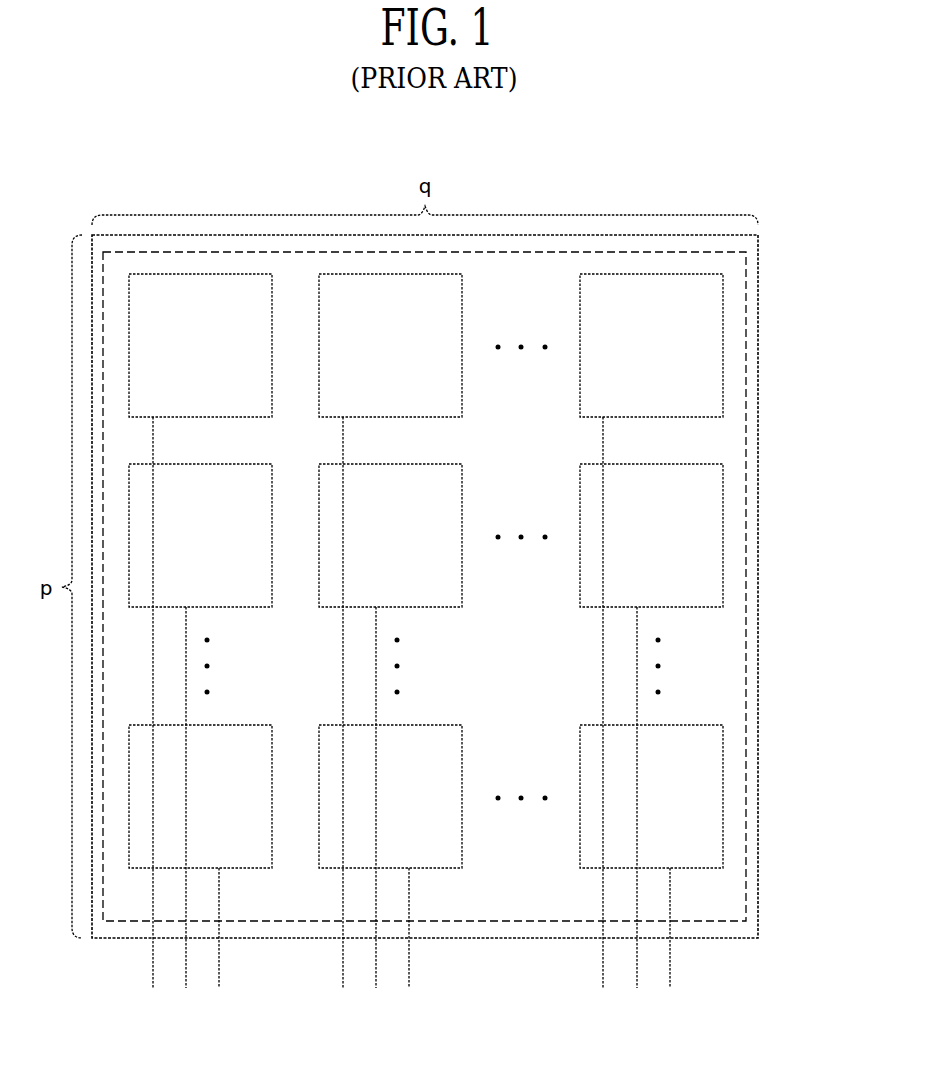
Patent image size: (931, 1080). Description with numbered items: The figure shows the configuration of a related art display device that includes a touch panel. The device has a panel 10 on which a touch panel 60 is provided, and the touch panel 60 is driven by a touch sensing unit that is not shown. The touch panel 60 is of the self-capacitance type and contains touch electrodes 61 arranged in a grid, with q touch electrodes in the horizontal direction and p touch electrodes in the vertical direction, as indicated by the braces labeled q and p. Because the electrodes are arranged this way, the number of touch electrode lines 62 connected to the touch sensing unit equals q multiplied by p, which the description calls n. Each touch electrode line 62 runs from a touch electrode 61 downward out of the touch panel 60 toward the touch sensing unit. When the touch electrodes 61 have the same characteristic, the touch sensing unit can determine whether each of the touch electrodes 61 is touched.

The panel 10 is at (758, 236).
The touch panel 60 is at (746, 344).
The touch electrodes 61 is at (723, 537).
The touch electrode lines 62 is at (637, 657).